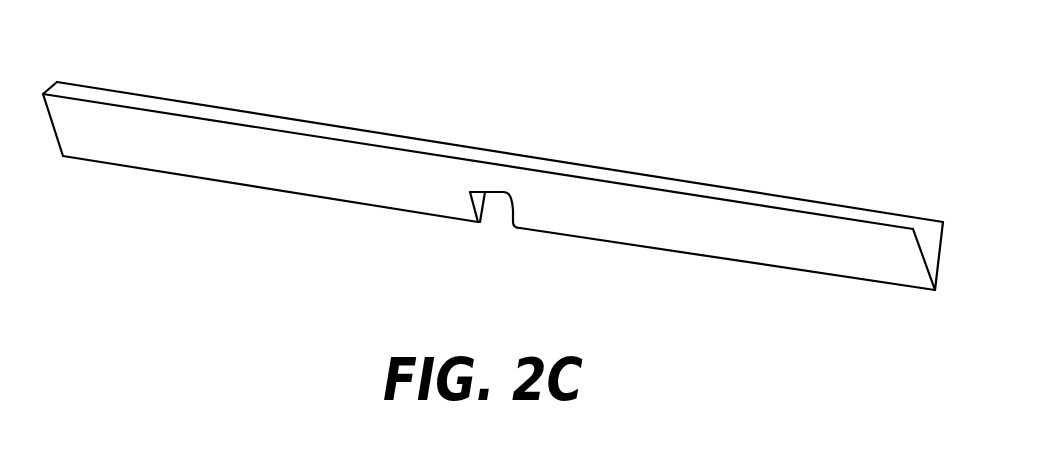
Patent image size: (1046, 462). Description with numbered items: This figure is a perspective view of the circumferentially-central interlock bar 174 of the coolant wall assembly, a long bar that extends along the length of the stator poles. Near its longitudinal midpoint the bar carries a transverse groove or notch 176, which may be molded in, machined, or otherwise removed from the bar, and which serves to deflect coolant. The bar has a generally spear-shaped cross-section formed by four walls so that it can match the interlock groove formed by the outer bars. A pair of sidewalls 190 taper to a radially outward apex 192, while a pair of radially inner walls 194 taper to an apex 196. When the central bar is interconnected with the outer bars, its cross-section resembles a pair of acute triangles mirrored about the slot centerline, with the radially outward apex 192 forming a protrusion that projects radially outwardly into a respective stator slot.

The circumferentially-central interlock bar 174 is at (493, 188).
The transverse groove or notch 176 is at (500, 210).
The sidewalls 190 is at (837, 260).
The radially outward apex 192 is at (720, 260).
The radially inner walls 194 is at (740, 197).
The apex 196 is at (798, 197).